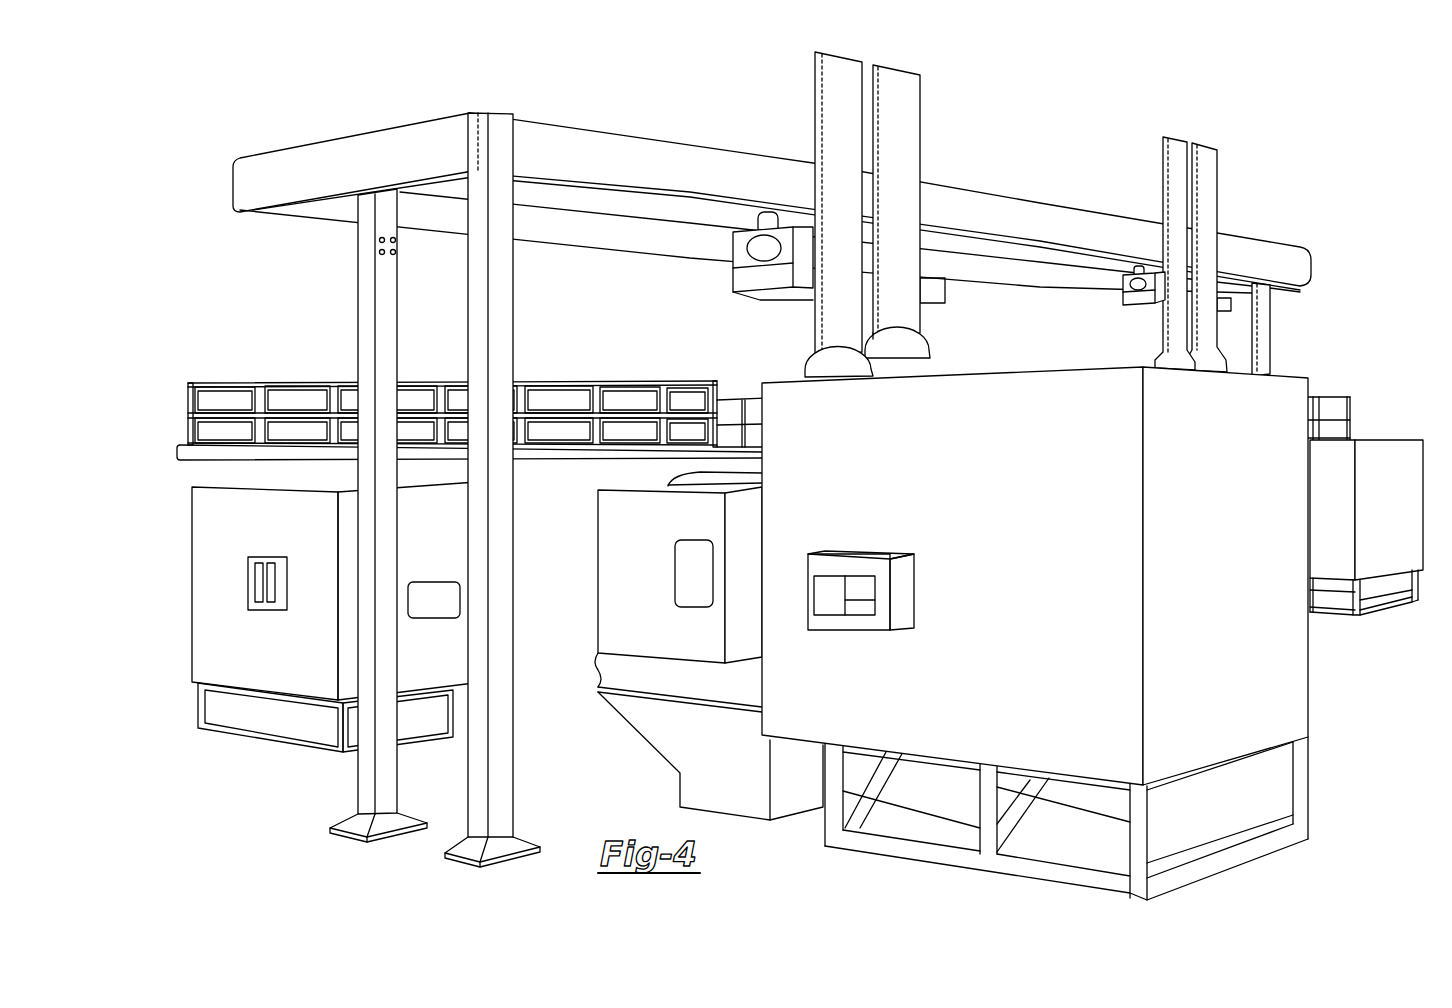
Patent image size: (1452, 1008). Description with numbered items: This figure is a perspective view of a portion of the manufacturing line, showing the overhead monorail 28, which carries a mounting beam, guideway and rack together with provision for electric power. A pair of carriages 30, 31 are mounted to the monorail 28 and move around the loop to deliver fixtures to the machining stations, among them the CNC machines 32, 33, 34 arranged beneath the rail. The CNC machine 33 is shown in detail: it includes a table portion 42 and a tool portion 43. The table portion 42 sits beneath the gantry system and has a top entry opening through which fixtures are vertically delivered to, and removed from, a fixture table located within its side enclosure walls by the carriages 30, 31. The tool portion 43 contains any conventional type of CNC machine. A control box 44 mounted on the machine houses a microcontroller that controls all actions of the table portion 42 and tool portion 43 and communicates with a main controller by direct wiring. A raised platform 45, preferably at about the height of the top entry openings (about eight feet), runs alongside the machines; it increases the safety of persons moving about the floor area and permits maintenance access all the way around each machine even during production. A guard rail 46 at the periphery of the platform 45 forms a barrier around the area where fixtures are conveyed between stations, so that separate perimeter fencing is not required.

The monorail 28 is at (686, 140).
The carriage 30 is at (1114, 283).
The carriage 31 is at (708, 282).
The CNC machine 32 is at (1392, 436).
The CNC machine 33 is at (1298, 668).
The CNC machine 34 is at (203, 587).
The table portion 42 is at (614, 639).
The tool portion 43 is at (939, 748).
The control box 44 is at (850, 550).
The raised platform 45 is at (549, 458).
The guard rail 46 is at (286, 380).